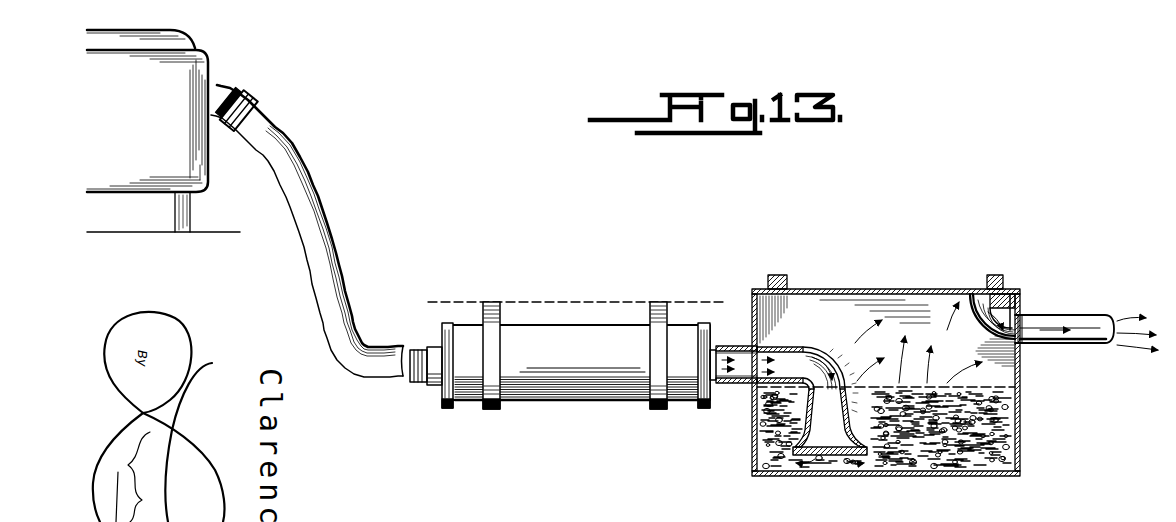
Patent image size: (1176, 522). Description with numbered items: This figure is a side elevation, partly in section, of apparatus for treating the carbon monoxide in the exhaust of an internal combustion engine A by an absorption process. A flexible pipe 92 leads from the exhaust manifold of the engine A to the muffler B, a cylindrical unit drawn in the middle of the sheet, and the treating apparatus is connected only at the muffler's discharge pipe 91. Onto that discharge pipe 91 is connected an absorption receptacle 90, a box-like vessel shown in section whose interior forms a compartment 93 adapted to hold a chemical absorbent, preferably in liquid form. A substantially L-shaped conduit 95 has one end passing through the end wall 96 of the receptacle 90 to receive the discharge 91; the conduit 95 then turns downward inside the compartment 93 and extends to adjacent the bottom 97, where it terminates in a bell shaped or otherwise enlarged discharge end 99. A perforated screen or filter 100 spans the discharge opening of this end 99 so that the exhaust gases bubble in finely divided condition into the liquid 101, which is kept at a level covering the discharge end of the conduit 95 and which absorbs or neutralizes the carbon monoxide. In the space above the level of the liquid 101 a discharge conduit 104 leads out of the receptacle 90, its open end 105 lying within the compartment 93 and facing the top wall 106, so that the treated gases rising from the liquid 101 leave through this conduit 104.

The internal combustion engine A is at (190, 75).
The pipe 92 is at (318, 221).
The pump cylinder B is at (575, 400).
The discharge pipe of the muffler 91 is at (740, 347).
The absorption receptacle 90 is at (866, 287).
The compartment 93 is at (905, 301).
The L-shaped conduit 95 is at (778, 348).
The end wall 96 is at (752, 439).
The bottom 97 is at (893, 477).
The bell shaped discharge end 99 is at (805, 420).
The perforated screen or filter 100 is at (838, 458).
The liquid 101 is at (1000, 423).
The discharge conduit 104 is at (1053, 323).
The open end 105 is at (987, 298).
The top wall 106 is at (955, 289).